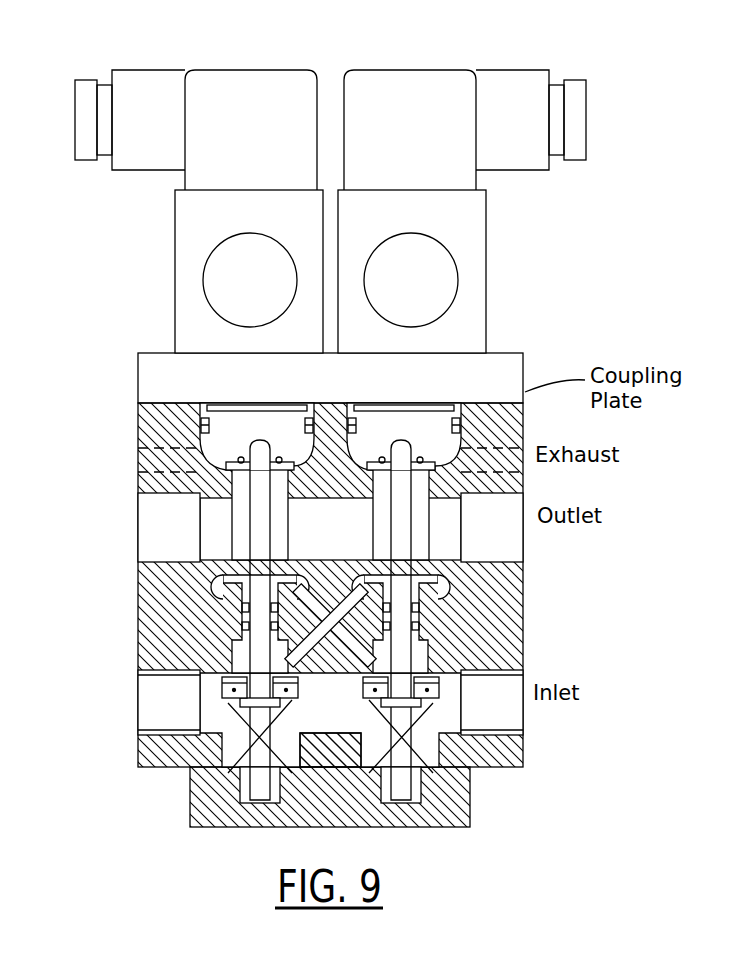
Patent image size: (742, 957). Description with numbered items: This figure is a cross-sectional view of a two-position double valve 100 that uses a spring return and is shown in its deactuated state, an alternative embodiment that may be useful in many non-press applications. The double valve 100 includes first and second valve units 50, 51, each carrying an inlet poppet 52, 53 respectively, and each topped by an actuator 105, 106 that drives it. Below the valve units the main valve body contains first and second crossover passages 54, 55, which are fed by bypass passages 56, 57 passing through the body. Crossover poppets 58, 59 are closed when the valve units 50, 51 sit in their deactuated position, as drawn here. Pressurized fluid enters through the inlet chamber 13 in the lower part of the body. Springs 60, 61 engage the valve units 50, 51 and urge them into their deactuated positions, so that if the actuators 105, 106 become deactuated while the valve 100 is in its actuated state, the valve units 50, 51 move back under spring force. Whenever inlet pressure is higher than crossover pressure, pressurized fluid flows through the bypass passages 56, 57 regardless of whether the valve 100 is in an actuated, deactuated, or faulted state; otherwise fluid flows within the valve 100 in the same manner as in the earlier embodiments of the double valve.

The double valve 100 is at (121, 354).
The actuator 105 is at (175, 250).
The actuator 106 is at (486, 248).
The first valve unit 50 is at (244, 530).
The second valve unit 51 is at (418, 540).
The inlet poppet 52 is at (228, 582).
The inlet poppet 53 is at (448, 584).
The first crossover passage 54 is at (298, 624).
The second crossover passage 55 is at (354, 632).
The bypass passage 56 is at (348, 682).
The bypass passage 57 is at (352, 692).
The crossover poppet 58 is at (220, 678).
The crossover poppet 59 is at (443, 681).
The spring 60 is at (226, 752).
The spring 61 is at (436, 728).
The inlet chamber 13 is at (298, 748).